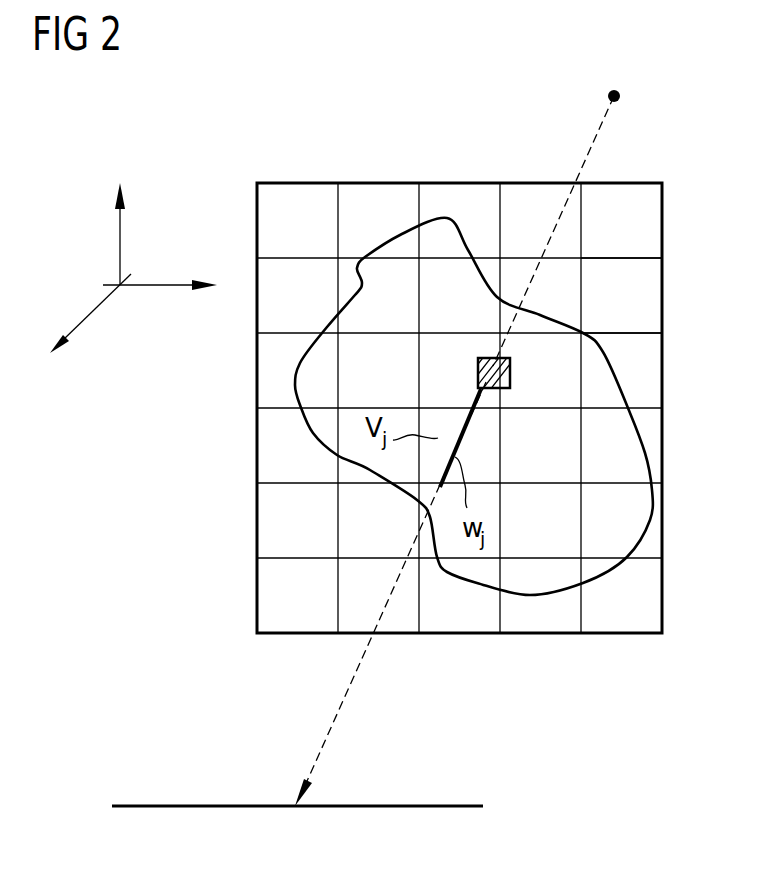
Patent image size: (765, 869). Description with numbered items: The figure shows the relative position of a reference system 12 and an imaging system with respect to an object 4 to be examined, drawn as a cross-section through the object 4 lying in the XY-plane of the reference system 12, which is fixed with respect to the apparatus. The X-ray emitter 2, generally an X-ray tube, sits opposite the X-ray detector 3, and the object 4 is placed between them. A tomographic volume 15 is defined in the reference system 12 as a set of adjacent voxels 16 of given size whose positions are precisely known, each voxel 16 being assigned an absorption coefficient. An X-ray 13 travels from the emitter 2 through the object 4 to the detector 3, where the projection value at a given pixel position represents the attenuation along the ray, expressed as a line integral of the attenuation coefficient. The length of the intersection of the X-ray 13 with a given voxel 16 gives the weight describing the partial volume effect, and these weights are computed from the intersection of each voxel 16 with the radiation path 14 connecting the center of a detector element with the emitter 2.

The X-ray emitter 2 is at (620, 98).
The X-ray detector 3 is at (232, 805).
The object 4 is at (313, 433).
The reference system 12 is at (120, 250).
The X-ray 13 is at (350, 688).
The radiation path 14 is at (593, 143).
The tomographic volume 15 is at (663, 368).
The voxel 16 is at (647, 303).